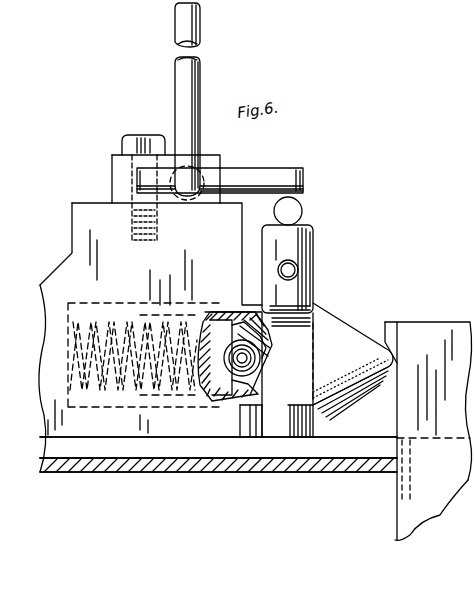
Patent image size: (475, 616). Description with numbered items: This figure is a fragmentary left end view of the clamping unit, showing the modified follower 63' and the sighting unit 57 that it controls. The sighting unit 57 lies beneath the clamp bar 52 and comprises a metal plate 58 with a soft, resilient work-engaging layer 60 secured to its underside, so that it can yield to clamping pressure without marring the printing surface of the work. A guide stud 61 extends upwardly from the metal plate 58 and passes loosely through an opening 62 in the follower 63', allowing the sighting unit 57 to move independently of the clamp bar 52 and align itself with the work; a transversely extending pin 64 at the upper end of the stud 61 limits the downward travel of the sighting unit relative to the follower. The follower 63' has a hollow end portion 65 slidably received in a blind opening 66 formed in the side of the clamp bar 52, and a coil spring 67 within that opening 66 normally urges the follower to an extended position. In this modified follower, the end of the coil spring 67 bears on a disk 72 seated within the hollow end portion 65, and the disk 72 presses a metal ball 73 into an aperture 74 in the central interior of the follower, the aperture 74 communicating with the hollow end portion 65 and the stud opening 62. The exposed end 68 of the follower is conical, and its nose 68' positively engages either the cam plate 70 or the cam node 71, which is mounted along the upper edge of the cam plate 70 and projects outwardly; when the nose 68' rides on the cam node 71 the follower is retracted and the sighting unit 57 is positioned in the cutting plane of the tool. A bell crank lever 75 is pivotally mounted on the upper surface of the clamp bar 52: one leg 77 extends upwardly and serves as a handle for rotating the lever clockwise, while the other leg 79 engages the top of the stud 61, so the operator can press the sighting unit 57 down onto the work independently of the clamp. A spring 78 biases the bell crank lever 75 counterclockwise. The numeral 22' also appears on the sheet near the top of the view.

The frame 22' is at (341, 13).
The leg of bell crank lever 77 is at (200, 72).
The spring 78 is at (222, 168).
The bell crank lever 75 is at (293, 168).
The other leg of bell crank lever 79 is at (305, 185).
The clamp bar 52 is at (78, 222).
The blind opening 66 is at (84, 308).
The hollow end portion 65 is at (187, 308).
The coil spring 67 is at (93, 403).
The sighting unit 57 is at (127, 473).
The work-engaging layer 60 is at (297, 473).
The metal plate 58 is at (220, 448).
The disk 72 is at (221, 403).
The metal ball 73 is at (267, 377).
The aperture 74 is at (270, 372).
The guide stud 61 is at (303, 245).
The transversely extending pin 64 is at (292, 270).
The opening 62 is at (327, 320).
The modified follower 63' is at (353, 352).
The exposed end 68 is at (393, 329).
The nose 68' is at (350, 396).
The cam node 71 is at (397, 318).
The cam plate 70 is at (442, 328).